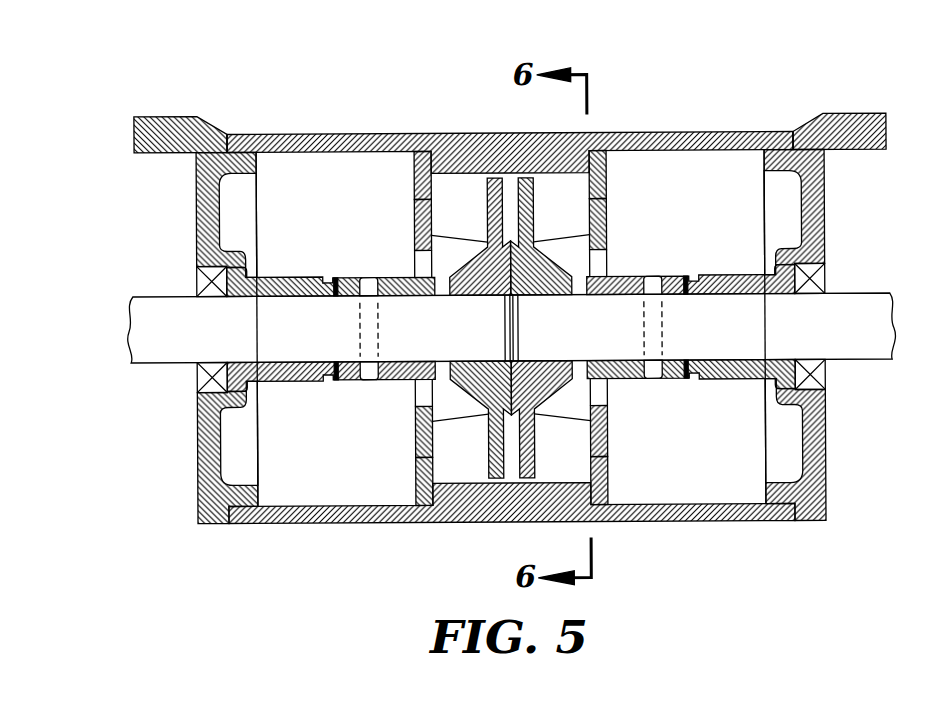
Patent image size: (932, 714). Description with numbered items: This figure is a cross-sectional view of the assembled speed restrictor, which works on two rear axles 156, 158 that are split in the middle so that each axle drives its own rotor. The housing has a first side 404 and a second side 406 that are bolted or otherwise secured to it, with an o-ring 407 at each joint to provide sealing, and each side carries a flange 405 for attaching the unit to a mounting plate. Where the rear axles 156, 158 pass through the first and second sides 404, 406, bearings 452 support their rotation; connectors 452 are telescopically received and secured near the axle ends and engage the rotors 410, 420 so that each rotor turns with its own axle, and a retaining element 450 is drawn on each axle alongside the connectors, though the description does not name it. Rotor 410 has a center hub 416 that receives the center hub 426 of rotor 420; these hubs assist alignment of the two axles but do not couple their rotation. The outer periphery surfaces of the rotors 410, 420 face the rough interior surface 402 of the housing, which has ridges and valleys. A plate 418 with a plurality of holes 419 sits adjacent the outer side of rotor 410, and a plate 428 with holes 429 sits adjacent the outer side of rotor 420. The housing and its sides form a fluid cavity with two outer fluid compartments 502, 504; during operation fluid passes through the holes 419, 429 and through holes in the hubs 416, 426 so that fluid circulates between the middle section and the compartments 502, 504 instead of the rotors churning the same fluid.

The rear axle 156 is at (243, 345).
The rear axle 158 is at (795, 347).
The rough surface 402 is at (698, 142).
The first side 404 is at (205, 208).
The flange 405 is at (155, 127).
The second side 406 is at (817, 204).
The o-ring 407 is at (230, 152).
The rotor 410 is at (482, 459).
The center hub 416 is at (522, 296).
The plate 418 is at (420, 232).
The holes 419 is at (420, 200).
The rotor 420 is at (585, 459).
The center hub 426 is at (522, 380).
The plate 428 is at (606, 228).
The holes 429 is at (606, 200).
The retaining ring 450 is at (622, 278).
The connector 452 is at (305, 296).
The fluid compartment 502 is at (370, 473).
The fluid compartment 504 is at (708, 472).